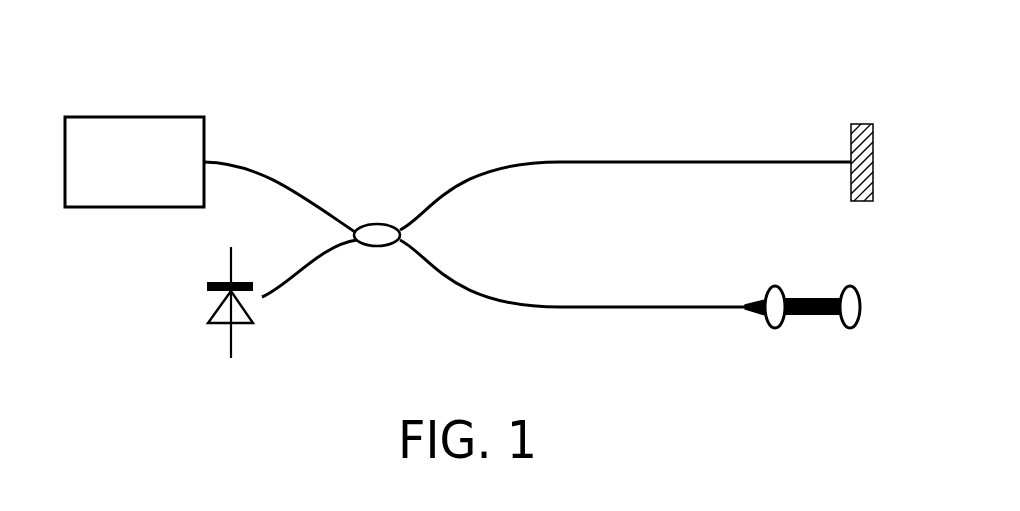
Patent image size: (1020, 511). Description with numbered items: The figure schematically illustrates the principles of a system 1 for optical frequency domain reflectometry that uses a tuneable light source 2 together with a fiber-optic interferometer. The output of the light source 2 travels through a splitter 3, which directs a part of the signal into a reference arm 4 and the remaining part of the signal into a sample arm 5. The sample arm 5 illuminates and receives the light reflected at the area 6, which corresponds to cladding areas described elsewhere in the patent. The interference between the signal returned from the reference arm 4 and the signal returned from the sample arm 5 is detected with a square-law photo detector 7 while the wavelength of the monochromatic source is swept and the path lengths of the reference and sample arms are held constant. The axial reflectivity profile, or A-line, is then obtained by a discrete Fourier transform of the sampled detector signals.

The system 1 is at (125, 339).
The tuneable light source 2 is at (133, 117).
The splitter 3 is at (375, 223).
The reference arm 4 is at (697, 162).
The sample arm 5 is at (627, 307).
The area 6 is at (807, 297).
The square-law photo detector 7 is at (250, 309).